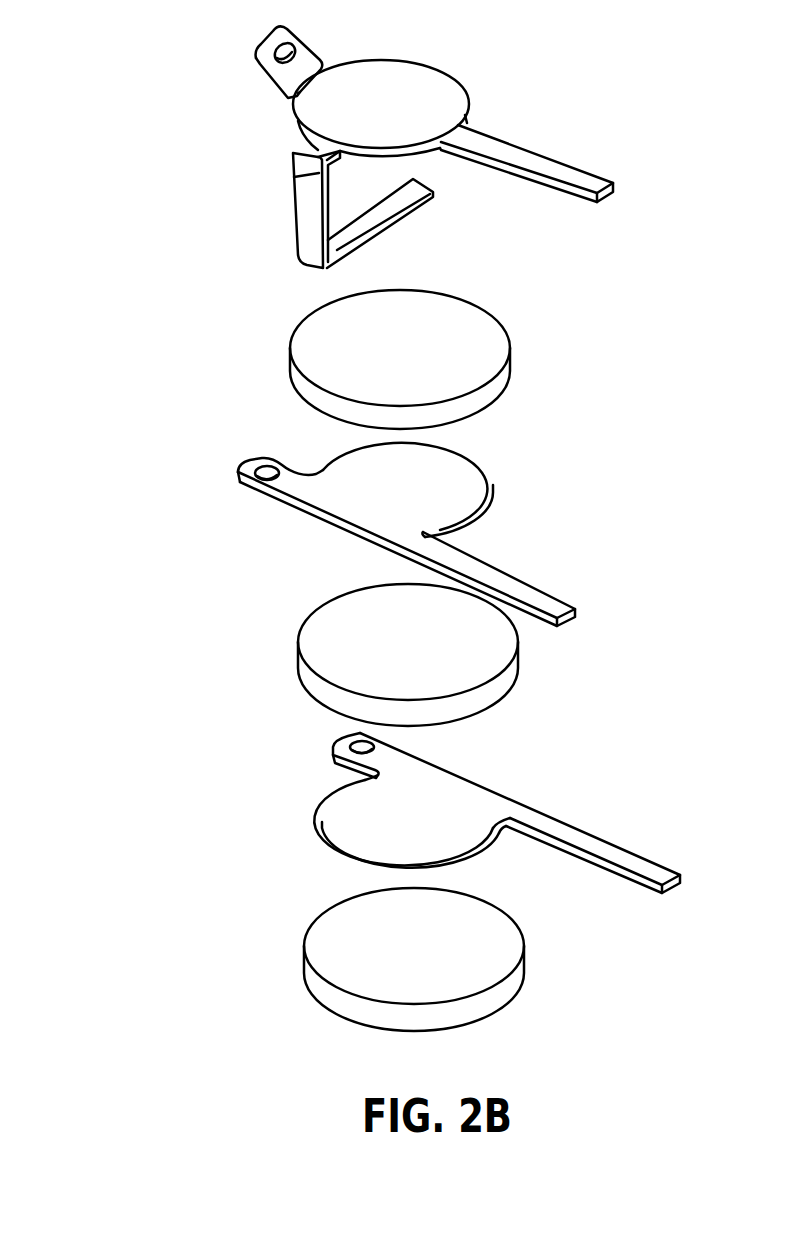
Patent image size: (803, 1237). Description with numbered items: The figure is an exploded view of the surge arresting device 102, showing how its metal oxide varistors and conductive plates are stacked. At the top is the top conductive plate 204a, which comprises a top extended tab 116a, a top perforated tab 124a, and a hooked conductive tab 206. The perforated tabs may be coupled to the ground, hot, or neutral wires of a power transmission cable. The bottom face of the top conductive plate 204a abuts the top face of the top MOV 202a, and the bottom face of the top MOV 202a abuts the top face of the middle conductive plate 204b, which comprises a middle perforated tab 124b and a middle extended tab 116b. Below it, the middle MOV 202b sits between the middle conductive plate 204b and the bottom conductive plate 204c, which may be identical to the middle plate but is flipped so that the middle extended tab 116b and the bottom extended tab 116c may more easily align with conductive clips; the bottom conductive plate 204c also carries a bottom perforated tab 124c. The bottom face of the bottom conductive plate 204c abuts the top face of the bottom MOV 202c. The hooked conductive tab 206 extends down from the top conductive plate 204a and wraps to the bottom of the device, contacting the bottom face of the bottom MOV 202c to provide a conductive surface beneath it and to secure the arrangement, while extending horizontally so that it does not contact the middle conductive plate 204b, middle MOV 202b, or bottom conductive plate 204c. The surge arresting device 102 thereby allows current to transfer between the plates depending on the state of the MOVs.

The surge arresting device 102 is at (186, 605).
The top conductive plate 204a is at (385, 110).
The top perforated tab 124a is at (262, 63).
The top extended tab 116a is at (542, 163).
The hooked conductive tab 206 is at (303, 210).
The top MOV 202a is at (473, 333).
The middle conductive plate 204b is at (427, 485).
The middle perforated tab 124b is at (247, 472).
The middle extended tab 116b is at (532, 598).
The middle MOV 202b is at (472, 660).
The bottom conductive plate 204c is at (363, 815).
The bottom perforated tab 124c is at (350, 748).
The bottom extended tab 116c is at (618, 855).
The bottom MOV 202c is at (485, 959).